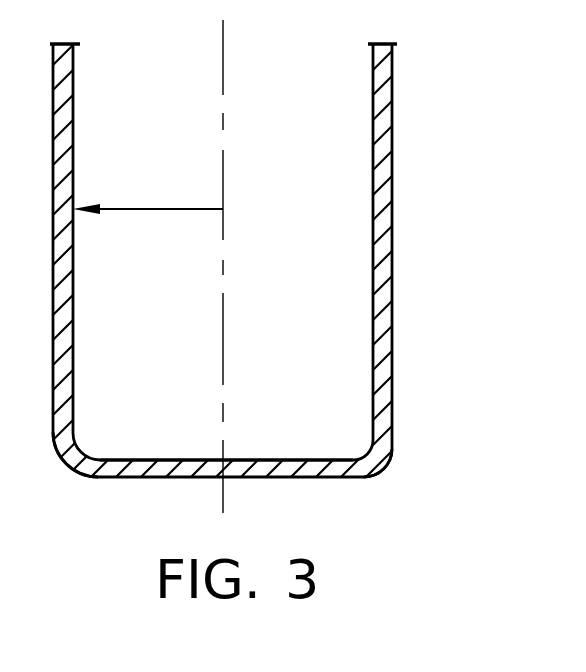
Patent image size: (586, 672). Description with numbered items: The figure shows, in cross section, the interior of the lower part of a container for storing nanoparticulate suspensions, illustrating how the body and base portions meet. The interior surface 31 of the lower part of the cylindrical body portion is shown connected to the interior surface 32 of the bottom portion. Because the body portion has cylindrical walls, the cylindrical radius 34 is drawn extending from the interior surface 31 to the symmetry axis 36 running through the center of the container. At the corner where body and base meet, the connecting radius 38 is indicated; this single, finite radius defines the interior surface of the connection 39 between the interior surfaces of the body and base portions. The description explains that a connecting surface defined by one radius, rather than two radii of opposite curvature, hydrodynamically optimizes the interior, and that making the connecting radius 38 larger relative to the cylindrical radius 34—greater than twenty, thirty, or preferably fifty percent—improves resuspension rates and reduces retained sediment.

The interior surface of body portion 31 is at (372, 108).
The interior surface of bottom portion 32 is at (237, 458).
The cylindrical radius 34 is at (143, 209).
The symmetry axis 36 is at (224, 48).
The connecting radius 38 is at (85, 442).
The connection between interior surfaces of body and base portions 39 is at (338, 416).